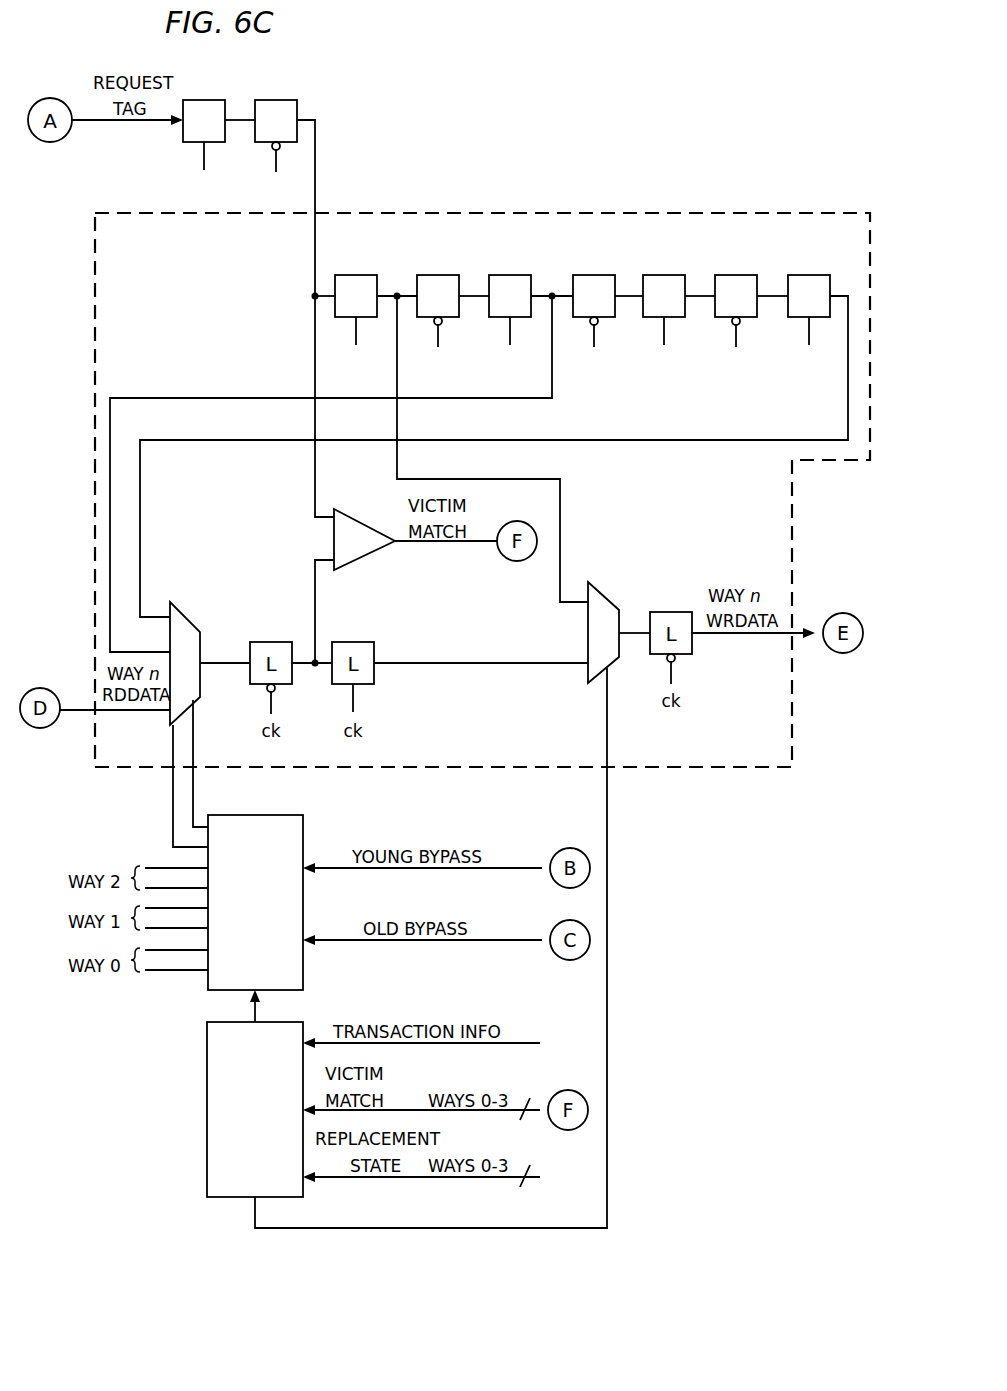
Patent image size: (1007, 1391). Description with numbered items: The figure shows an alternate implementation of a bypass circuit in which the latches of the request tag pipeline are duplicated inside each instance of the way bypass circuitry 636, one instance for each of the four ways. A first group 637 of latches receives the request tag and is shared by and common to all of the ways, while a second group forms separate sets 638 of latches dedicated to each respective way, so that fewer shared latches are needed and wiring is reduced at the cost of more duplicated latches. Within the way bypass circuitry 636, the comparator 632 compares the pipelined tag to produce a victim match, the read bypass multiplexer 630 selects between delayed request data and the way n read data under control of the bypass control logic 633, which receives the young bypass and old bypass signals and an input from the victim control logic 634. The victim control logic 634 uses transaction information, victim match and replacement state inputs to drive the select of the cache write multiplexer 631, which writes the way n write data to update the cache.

The read bypass multiplexer 630 is at (186, 617).
The cache write multiplexer 631 is at (606, 599).
The comparator 632 is at (365, 556).
The bypass control logic 633 is at (237, 962).
The victim control logic 634 is at (237, 1168).
The way bypass circuitry 636 is at (746, 768).
The first group of latches 637 is at (297, 90).
The separate sets of latches 638 is at (830, 268).